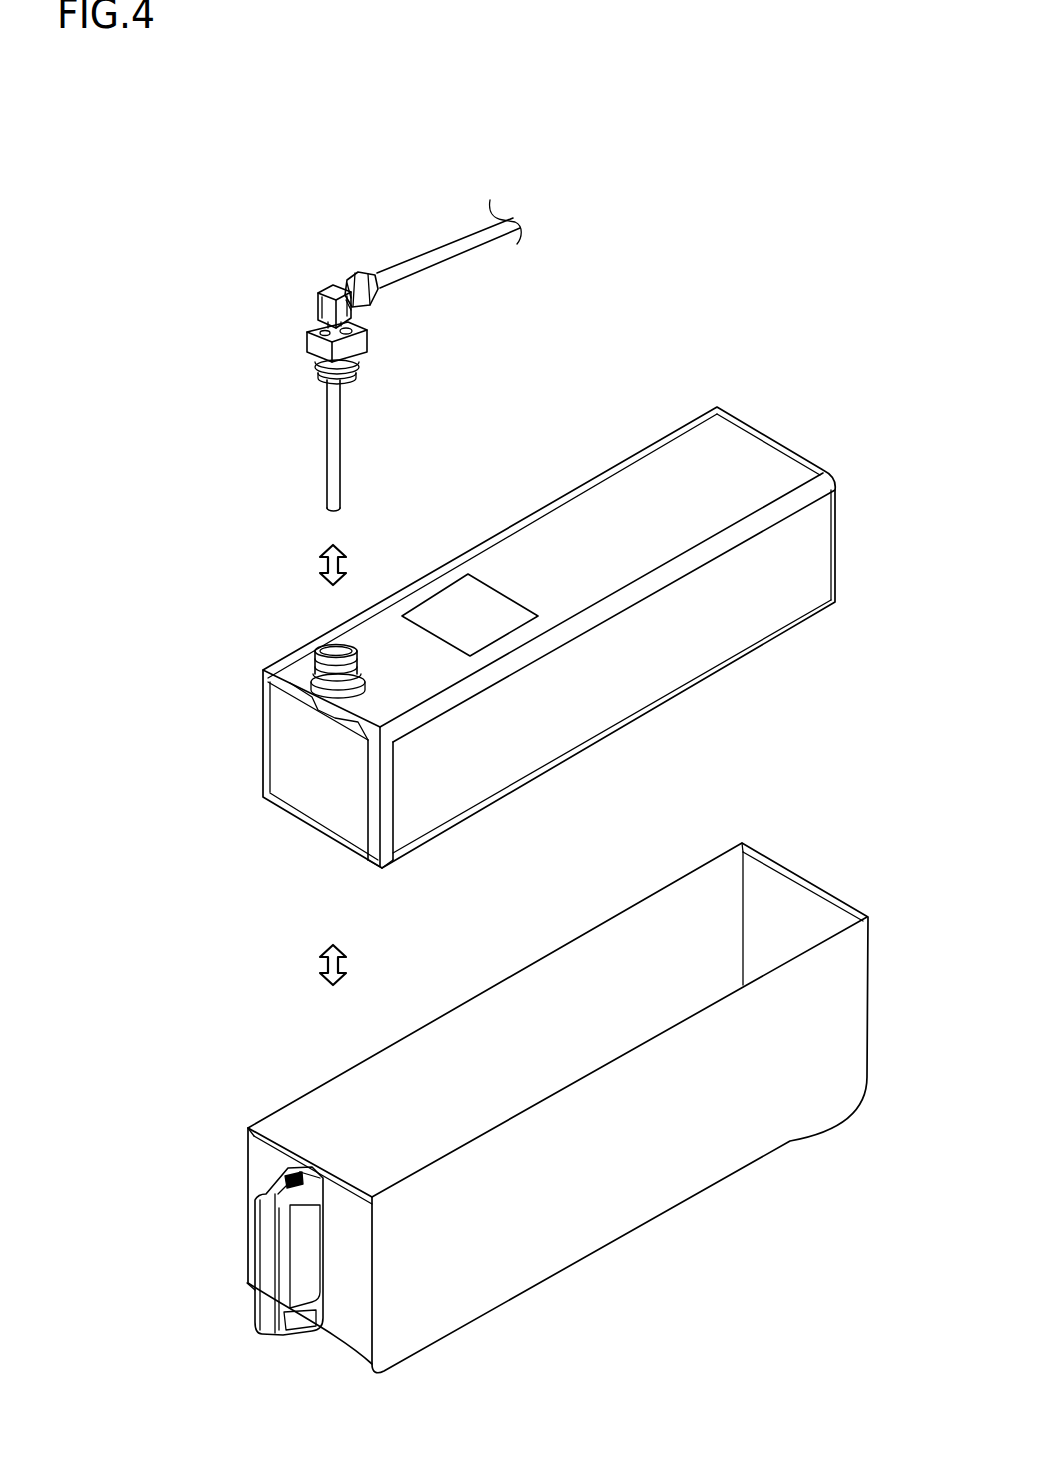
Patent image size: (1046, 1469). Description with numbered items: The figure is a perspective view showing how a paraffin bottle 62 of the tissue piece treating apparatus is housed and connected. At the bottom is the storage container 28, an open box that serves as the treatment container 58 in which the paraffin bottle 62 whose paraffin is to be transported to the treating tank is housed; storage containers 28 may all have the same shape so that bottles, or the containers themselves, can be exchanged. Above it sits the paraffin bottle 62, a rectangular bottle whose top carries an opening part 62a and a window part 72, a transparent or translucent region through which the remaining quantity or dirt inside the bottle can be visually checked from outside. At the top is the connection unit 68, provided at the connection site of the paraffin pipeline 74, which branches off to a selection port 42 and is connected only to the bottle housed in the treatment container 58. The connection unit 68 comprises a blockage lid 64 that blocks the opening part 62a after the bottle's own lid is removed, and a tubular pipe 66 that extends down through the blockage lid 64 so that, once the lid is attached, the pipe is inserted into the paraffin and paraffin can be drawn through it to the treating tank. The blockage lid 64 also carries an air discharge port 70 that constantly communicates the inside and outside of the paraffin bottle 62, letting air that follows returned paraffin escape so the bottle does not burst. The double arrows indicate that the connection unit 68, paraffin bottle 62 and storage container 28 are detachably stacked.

The storage container 28 is at (805, 908).
The treatment container 58 is at (557, 1108).
The selection port 42 is at (433, 253).
The paraffin bottle 62 is at (713, 458).
The opening part 62a is at (317, 672).
The blockage lid 64 is at (315, 328).
The tubular pipe 66 is at (333, 487).
The connection unit 68 is at (222, 300).
The air discharge port 70 is at (362, 368).
The window part 72 is at (462, 608).
The paraffin pipeline 74 is at (383, 235).